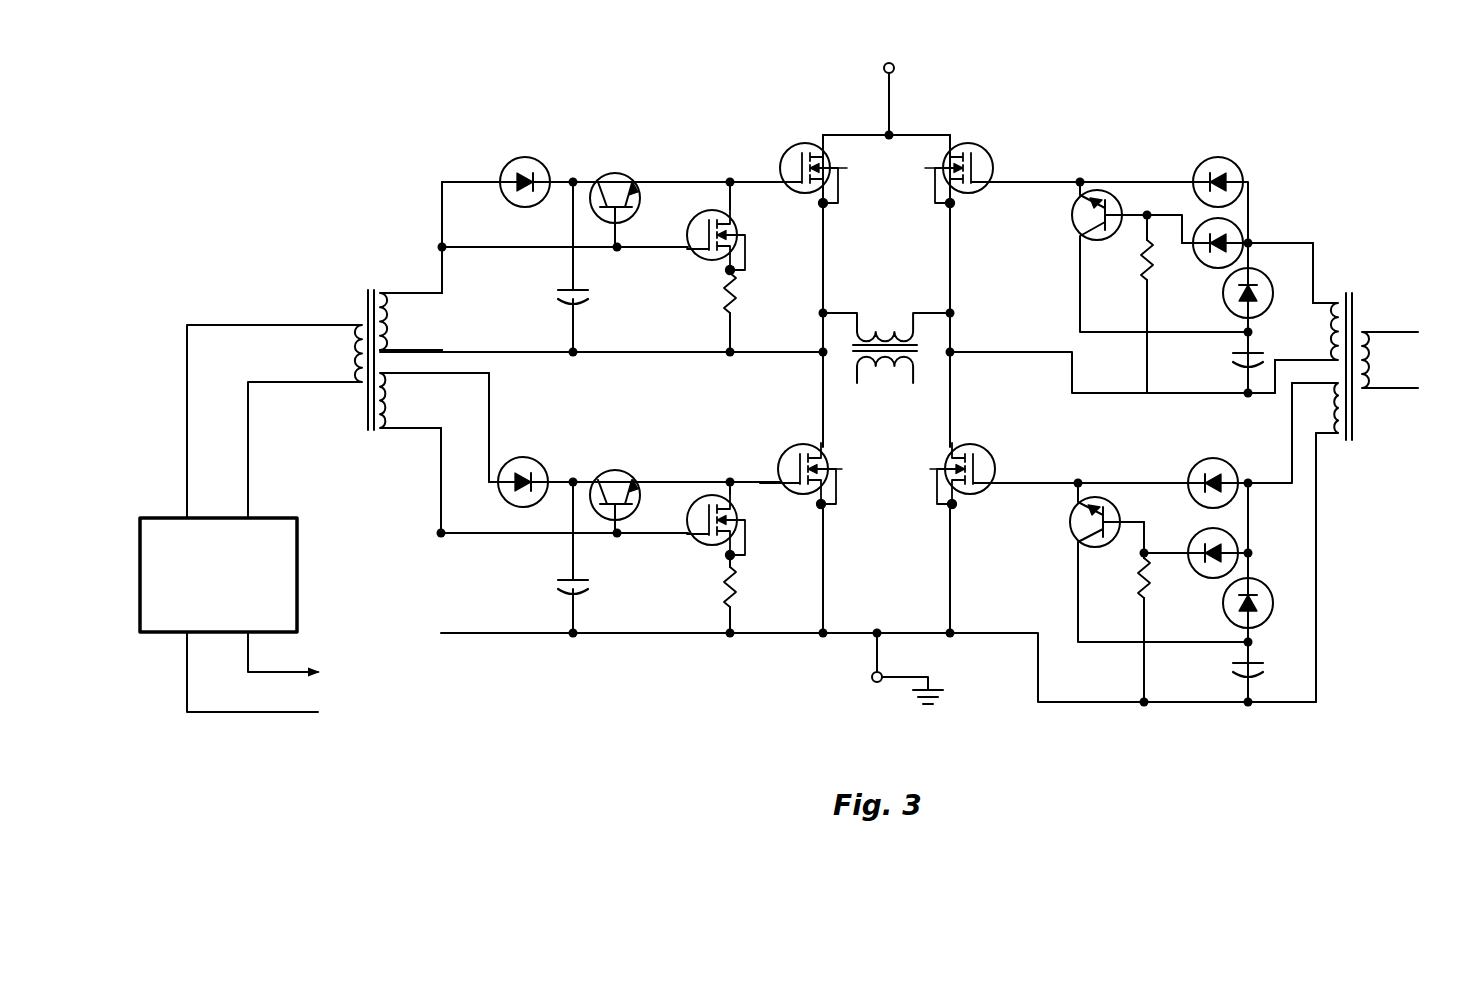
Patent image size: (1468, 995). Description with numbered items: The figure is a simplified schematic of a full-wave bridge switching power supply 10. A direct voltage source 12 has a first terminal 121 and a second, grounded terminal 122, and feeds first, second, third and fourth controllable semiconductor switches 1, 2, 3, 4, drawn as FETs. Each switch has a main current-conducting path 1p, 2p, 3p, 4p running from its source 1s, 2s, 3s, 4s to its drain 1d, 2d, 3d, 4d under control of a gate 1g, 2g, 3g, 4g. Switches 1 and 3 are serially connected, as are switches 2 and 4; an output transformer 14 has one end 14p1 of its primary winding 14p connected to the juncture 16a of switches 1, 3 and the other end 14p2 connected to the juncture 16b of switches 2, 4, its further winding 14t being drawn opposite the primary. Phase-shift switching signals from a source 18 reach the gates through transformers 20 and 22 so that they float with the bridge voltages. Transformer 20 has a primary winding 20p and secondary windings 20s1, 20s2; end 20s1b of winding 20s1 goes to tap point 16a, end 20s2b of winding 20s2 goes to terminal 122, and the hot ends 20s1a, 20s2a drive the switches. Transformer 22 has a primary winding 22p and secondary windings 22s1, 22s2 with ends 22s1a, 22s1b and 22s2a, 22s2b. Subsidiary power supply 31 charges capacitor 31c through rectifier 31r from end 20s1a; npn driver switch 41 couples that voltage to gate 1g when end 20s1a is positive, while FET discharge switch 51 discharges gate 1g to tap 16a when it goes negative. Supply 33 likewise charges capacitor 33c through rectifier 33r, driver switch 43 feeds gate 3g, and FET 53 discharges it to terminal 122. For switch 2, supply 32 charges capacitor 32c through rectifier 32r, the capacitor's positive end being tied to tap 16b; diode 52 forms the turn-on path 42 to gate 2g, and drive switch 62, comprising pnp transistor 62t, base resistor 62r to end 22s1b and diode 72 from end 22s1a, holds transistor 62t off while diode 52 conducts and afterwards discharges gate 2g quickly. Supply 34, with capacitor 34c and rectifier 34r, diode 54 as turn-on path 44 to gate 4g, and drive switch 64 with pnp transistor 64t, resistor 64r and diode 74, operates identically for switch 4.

The first controllable semiconductor switch 1 is at (772, 112).
The drain 1d is at (823, 135).
The gate 1g is at (759, 180).
The main current-conducting path 1p is at (854, 165).
The source 1s is at (822, 217).
The second controllable semiconductor switch 2 is at (990, 130).
The drain 2d is at (944, 135).
The gate 2g is at (1028, 182).
The main current conducting path 2p is at (919, 165).
The source 2s is at (950, 217).
The third controllable semiconductor switch 3 is at (762, 439).
The drain 3d is at (818, 432).
The control electrode 3g is at (754, 480).
The controllable path 3p is at (849, 465).
The source 3s is at (823, 540).
The fourth controllable semiconductor switch 4 is at (1000, 445).
The drain 4d is at (950, 440).
The control electrode 4g is at (1006, 483).
The controllable path 4p is at (914, 465).
The source 4s is at (950, 545).
The full-wave switching power supply 10 is at (1025, 352).
The source of direct voltage 12 is at (881, 352).
The first input terminal 121 is at (883, 62).
The second terminal 122 is at (877, 668).
The output transformer 14 is at (1045, 358).
The primary winding 14p is at (855, 305).
The one end of primary winding 14p1 is at (824, 316).
The other end of primary winding 14p2 is at (944, 312).
The secondary winding of transformer 14 14t is at (885, 387).
The tap point 16a is at (820, 356).
The tap point 16b is at (958, 350).
The source of phase-shift switching signals 18 is at (297, 578).
The transformer 20 is at (394, 357).
The primary winding 20p is at (354, 350).
The first secondary winding 20s1 is at (395, 302).
The hot end of secondary winding 20s1a is at (378, 293).
The end of secondary winding 20s1b is at (392, 347).
The second secondary winding 20s2 is at (370, 400).
The end of secondary winding 20s2a is at (390, 393).
The end of secondary winding 20s2b is at (383, 428).
The transformer 22 is at (1329, 470).
The primary winding 22p is at (1368, 355).
The first secondary winding 22s1 is at (1350, 315).
The end of secondary winding 22s1a is at (1333, 300).
The end of secondary winding 22s1b is at (1283, 375).
The second secondary winding 22s2 is at (1348, 412).
The end of secondary winding 22s2a is at (1325, 388).
The end of secondary winding 22s2b is at (1328, 432).
The first subsidiary power supply 31 is at (601, 204).
The rectifier 31r is at (506, 163).
The capacitor 31c is at (563, 288).
The subsidiary power supply 32 is at (1153, 248).
The rectifier 32r is at (1226, 305).
The capacitor 32c is at (1262, 355).
The second subsidiary power supply 33 is at (877, 558).
The rectifier 33r is at (530, 456).
The capacitor 33c is at (560, 584).
The fourth subsidiary power supply 34 is at (1159, 545).
The rectifier 34r is at (1274, 578).
The capacitor 34c is at (1264, 665).
The driver switch 41 is at (622, 143).
The diode 42 is at (1127, 169).
The driver switch 43 is at (618, 466).
The diode 44 is at (1096, 472).
The discharge switch 51 is at (695, 265).
The rectifier or diode 52 is at (1218, 157).
The discharge switch 53 is at (695, 570).
The rectifier or diode 54 is at (1178, 470).
The drive switch 62 is at (1112, 287).
The bipolar pnp transistor 62t is at (1072, 214).
The resistor 62r is at (1138, 262).
The drive switch 64 is at (1131, 592).
The bipolar pnp transistor 64t is at (1072, 520).
The resistor 64r is at (1142, 582).
The rectifier or diode 72 is at (1202, 265).
The rectifier or diode 74 is at (1202, 576).